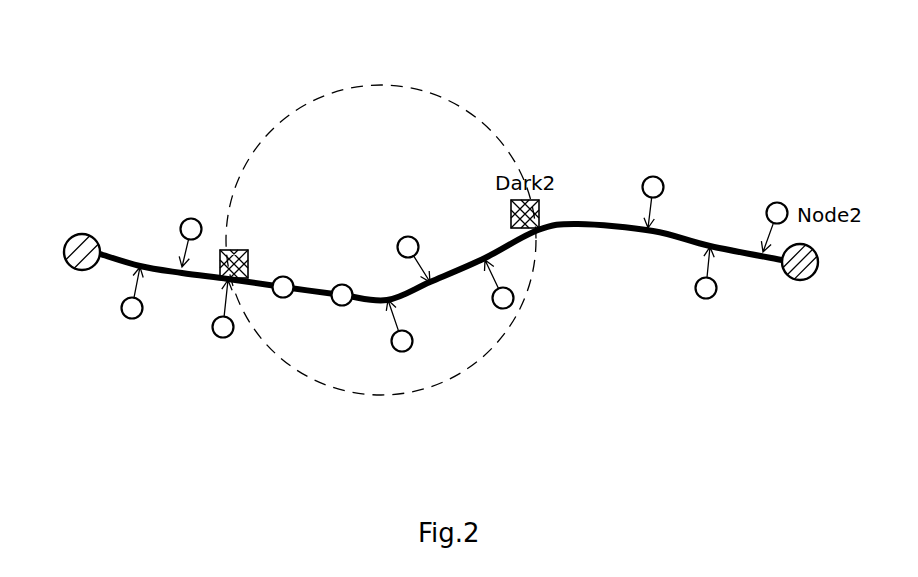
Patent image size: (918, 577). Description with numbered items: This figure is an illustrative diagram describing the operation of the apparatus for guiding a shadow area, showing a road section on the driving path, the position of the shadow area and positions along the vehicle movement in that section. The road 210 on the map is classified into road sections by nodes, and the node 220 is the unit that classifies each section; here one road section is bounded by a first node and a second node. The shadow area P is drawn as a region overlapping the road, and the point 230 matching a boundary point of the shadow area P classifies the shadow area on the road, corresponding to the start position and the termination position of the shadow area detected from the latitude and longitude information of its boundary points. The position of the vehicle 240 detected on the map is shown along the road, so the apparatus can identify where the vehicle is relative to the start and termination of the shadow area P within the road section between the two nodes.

The road 210 is at (693, 233).
The node 220 is at (67, 265).
The point matching a boundary point of the shadow area 230 is at (248, 250).
The position of the vehicle 240 is at (513, 300).
The shadow area P is at (390, 86).